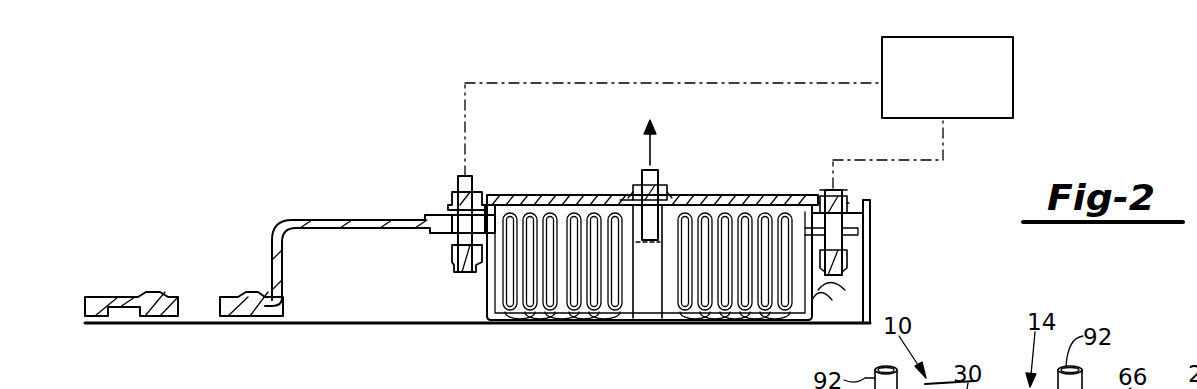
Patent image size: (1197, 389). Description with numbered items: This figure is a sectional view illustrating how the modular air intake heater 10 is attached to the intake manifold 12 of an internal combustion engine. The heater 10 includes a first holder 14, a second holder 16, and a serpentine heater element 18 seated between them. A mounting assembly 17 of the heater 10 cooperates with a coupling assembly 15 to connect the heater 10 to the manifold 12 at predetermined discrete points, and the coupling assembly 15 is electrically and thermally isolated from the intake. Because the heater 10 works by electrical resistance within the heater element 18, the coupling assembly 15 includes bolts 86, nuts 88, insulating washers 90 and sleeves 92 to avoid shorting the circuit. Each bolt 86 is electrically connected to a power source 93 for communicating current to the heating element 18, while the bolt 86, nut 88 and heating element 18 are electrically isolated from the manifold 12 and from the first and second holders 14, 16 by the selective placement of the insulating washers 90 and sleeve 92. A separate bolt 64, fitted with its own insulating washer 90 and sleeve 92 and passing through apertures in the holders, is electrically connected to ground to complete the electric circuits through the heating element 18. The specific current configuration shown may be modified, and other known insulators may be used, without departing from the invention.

The modular air intake heater 10 is at (652, 270).
The intake manifold 12 is at (293, 223).
The first holder 14 is at (819, 197).
The coupling assembly 15 is at (861, 203).
The second holder 16 is at (846, 320).
The mounting assembly 17 is at (440, 254).
The serpentine heater element 18 is at (523, 290).
The bolt 64 is at (668, 200).
The bolt 86 is at (466, 272).
The nut 88 is at (452, 197).
The insulating washer 90 is at (640, 195).
The insulating sleeve 92 is at (632, 198).
The power source 93 is at (982, 37).